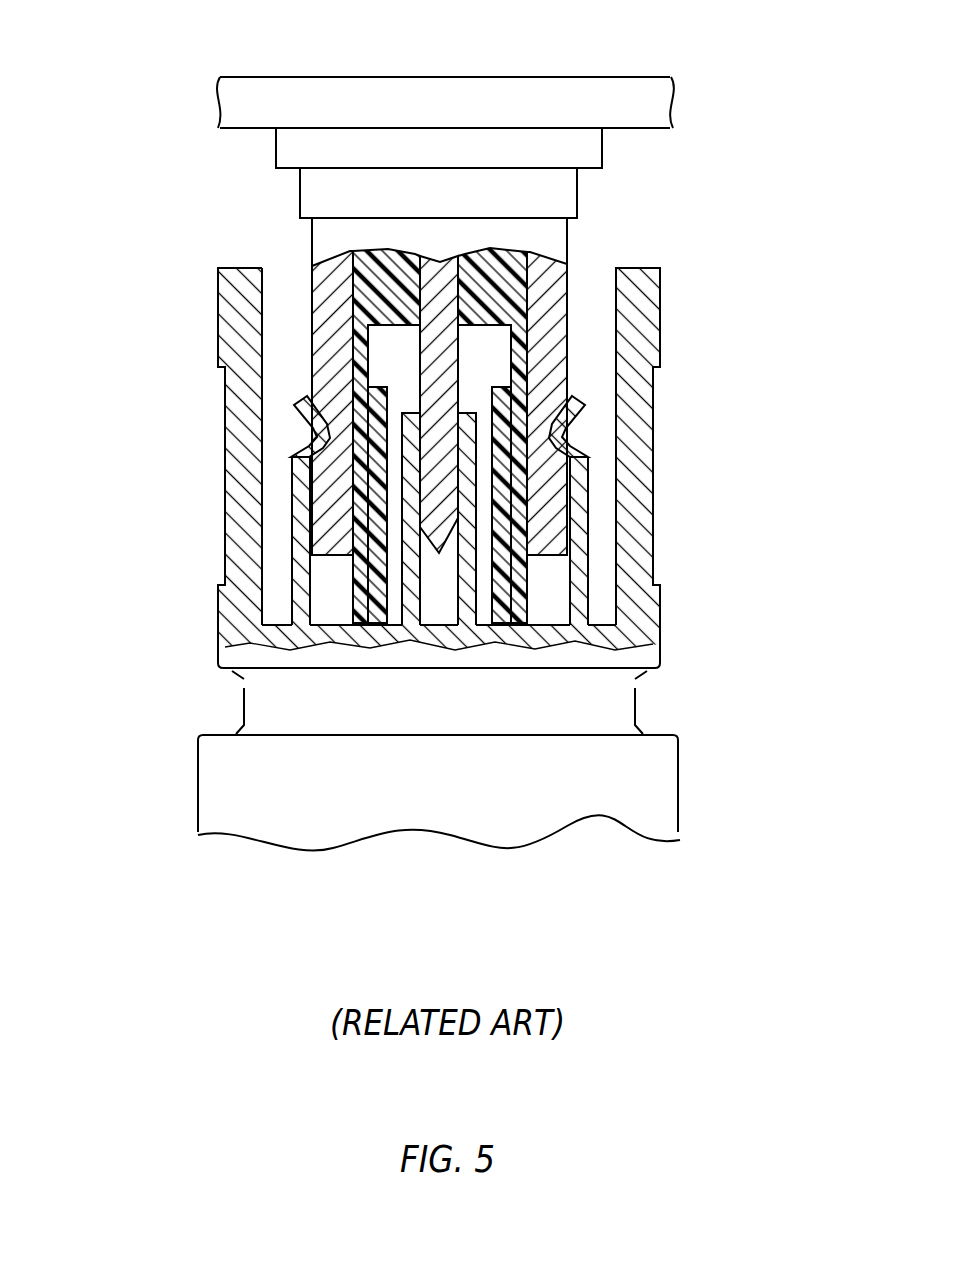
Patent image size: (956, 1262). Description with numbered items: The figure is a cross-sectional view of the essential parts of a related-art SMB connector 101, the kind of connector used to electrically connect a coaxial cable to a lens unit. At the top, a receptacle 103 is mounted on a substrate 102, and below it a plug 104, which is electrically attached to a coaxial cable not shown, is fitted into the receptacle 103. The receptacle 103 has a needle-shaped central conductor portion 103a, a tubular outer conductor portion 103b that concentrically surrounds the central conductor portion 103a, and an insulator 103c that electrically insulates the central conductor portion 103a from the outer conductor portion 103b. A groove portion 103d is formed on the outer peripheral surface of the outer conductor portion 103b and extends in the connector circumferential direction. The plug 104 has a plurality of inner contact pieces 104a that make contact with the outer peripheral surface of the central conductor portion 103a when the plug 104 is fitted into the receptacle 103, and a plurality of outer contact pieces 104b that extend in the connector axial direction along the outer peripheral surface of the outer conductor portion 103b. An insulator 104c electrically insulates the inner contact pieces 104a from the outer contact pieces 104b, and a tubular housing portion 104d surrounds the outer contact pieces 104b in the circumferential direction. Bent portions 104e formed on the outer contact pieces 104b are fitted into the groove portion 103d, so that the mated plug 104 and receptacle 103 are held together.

The SMB connector 101 is at (419, 485).
The substrate 102 is at (458, 90).
The receptacle 103 is at (596, 184).
The central conductor portion 103a is at (440, 268).
The outer conductor portion 103b is at (328, 292).
The insulator 103c is at (365, 262).
The groove portion 103d is at (553, 452).
The plug 104 is at (450, 848).
The inner contact pieces 104a is at (415, 565).
The outer contact pieces 104b is at (300, 555).
The insulator 104c is at (498, 625).
The housing portion 104d is at (652, 325).
The bent portions 104e is at (303, 435).